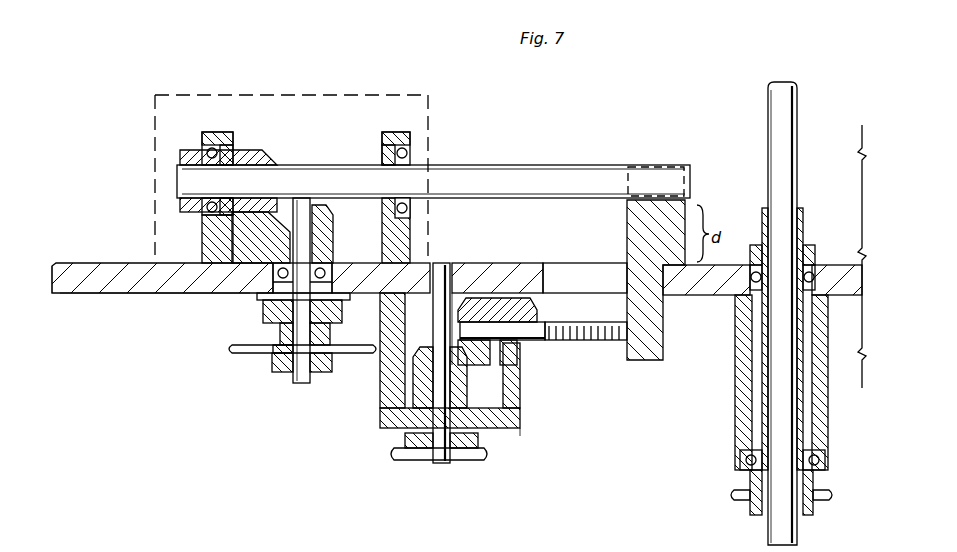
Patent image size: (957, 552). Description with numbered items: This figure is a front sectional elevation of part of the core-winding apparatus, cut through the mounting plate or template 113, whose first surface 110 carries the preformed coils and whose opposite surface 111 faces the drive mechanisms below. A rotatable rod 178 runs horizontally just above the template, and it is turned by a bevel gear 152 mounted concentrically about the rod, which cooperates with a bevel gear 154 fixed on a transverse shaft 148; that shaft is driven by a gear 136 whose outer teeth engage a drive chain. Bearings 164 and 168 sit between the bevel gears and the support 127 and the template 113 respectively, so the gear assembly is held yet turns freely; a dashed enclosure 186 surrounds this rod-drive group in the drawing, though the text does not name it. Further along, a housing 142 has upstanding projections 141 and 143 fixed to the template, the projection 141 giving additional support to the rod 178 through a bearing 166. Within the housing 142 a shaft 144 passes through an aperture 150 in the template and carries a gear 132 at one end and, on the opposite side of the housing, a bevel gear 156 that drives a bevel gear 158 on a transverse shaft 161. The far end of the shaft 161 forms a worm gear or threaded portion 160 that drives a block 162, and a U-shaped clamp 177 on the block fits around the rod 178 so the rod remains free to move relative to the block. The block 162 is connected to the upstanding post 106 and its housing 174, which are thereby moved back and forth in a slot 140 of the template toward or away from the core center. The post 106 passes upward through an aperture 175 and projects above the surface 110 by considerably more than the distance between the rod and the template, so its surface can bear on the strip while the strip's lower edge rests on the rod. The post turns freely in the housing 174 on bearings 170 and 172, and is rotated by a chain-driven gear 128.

The upstanding post 106 is at (766, 530).
The first surface of template 110 is at (78, 268).
The opposite surface of template 111 is at (85, 293).
The mounting plate or template 113 is at (52, 290).
The support 127 is at (205, 230).
The gear 128 is at (745, 505).
The gear 132 is at (405, 462).
The gear 136 is at (275, 362).
The slot 140 is at (558, 272).
The upstanding projection 141 is at (405, 232).
The housing 142 is at (530, 437).
The upstanding projection 143 is at (520, 395).
The shaft 144 is at (445, 465).
The transverse shaft 148 is at (300, 385).
The aperture 150 is at (455, 300).
The bevel gear 152 is at (272, 150).
The bevel gear 154 is at (330, 212).
The bevel gear 156 is at (520, 375).
The bevel gear 158 is at (470, 300).
The worm gear or threaded portion 160 is at (580, 341).
The transverse shaft 161 is at (535, 324).
The block 162 is at (655, 315).
The bearing 164 is at (210, 146).
The bearing 166 is at (408, 138).
The bearing 168 is at (262, 277).
The bearing 170 is at (815, 268).
The bearing 172 is at (745, 456).
The housing 174 is at (740, 405).
The aperture 175 is at (840, 287).
The U-shaped clamp 177 is at (652, 166).
The rotatable rod 178 is at (495, 172).
The drive unit (dashed) 186 is at (224, 92).